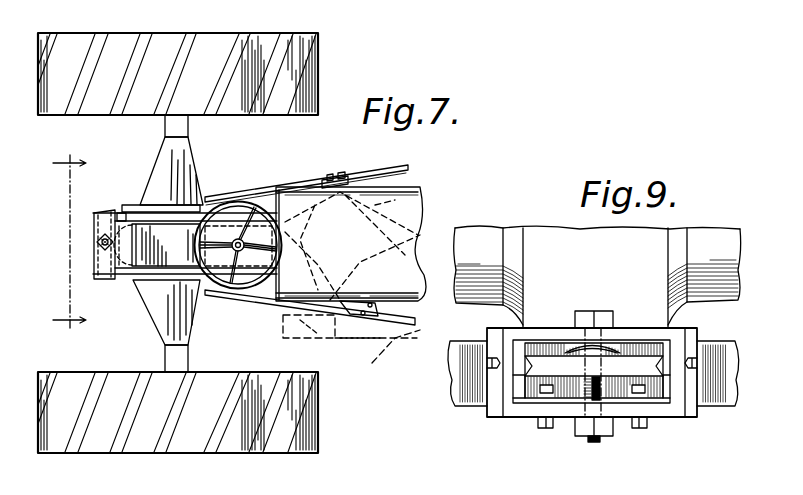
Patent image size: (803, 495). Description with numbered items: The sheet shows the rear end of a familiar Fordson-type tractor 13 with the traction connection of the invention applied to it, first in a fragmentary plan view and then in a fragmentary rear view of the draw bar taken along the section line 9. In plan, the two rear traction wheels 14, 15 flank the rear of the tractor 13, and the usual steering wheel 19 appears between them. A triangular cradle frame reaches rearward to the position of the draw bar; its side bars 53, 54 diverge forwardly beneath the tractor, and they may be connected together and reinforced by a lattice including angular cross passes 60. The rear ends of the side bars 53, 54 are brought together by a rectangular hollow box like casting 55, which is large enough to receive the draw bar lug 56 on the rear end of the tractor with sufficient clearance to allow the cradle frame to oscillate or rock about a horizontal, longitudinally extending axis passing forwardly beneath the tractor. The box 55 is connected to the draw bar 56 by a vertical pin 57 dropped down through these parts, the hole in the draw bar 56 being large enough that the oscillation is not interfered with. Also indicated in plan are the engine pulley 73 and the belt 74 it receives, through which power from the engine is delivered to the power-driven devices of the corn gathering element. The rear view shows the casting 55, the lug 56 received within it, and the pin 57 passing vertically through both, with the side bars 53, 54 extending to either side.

In FIG. 7, the section line 9- 9 is at (69, 243).
In FIG. 7, the tractor 13 is at (376, 372).
In FIG. 7, the rear traction wheel 14 is at (207, 382).
In FIG. 7, the rear traction wheel 15 is at (318, 78).
In FIG. 7, the steering wheel 19 is at (234, 291).
In FIG. 7, the side bar 53 is at (407, 165).
In FIG. 9, the side bar 53 is at (460, 393).
In FIG. 7, the side bar 54 is at (403, 326).
In FIG. 9, the side bar 54 is at (723, 397).
In FIG. 7, the rectangular hollow box like casting 55 is at (102, 265).
In FIG. 9, the rectangular hollow box like casting 55 is at (515, 410).
In FIG. 7, the draw bar lug 56 is at (119, 212).
In FIG. 9, the draw bar lug 56 is at (633, 362).
In FIG. 7, the vertical pin 57 is at (96, 242).
In FIG. 9, the vertical pin 57 is at (583, 397).
In FIG. 7, the angular cross passes 60 is at (378, 223).
In FIG. 7, the pulley 73 is at (307, 335).
In FIG. 7, the belt 74 is at (363, 339).